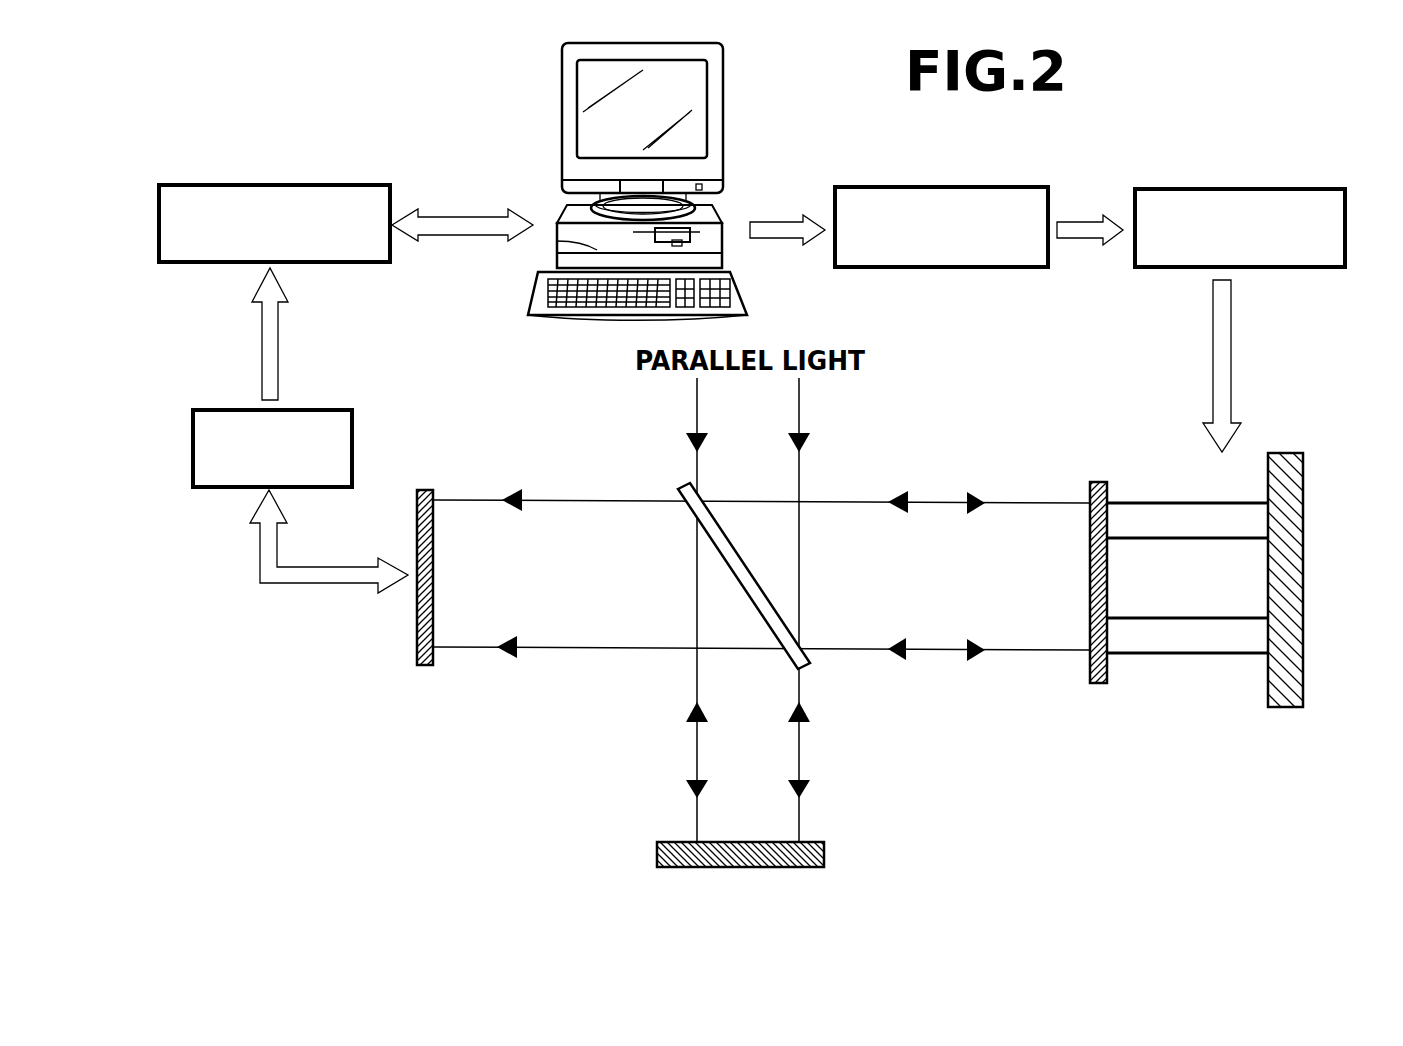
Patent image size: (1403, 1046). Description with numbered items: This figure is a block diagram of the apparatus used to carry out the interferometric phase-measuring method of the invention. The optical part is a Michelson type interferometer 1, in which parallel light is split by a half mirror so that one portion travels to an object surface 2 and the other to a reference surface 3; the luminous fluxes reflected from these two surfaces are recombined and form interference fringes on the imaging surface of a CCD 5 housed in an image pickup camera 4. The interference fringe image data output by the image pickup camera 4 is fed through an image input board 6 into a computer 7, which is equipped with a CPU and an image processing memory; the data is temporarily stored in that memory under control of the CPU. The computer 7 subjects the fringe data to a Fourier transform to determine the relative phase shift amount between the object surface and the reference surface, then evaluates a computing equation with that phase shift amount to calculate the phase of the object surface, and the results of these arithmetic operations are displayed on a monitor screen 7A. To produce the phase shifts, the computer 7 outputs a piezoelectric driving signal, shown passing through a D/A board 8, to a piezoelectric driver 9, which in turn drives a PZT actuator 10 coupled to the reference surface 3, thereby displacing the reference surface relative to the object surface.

The Michelson type interferometer 1 is at (645, 465).
The object surface 2 is at (820, 843).
The reference surface 3 is at (1089, 677).
The image pickup camera 4 is at (218, 487).
The CCD 5 is at (425, 666).
The image input board 6 is at (345, 186).
The computer 7 is at (623, 181).
The monitor screen 7A is at (593, 127).
The D/A board 8 is at (1007, 187).
The piezoelectric driver 9 is at (1292, 189).
The PZT actuator 10 is at (1161, 472).